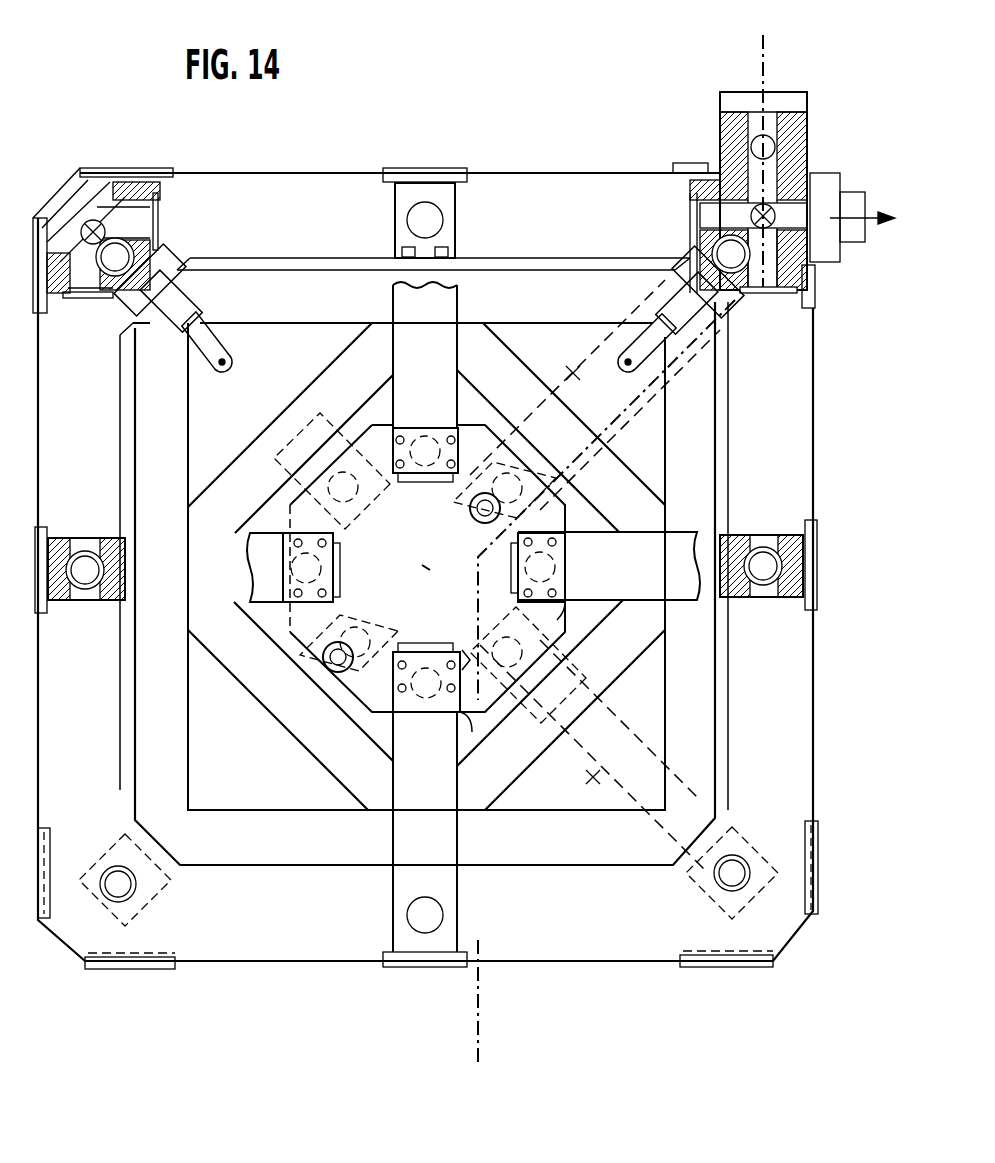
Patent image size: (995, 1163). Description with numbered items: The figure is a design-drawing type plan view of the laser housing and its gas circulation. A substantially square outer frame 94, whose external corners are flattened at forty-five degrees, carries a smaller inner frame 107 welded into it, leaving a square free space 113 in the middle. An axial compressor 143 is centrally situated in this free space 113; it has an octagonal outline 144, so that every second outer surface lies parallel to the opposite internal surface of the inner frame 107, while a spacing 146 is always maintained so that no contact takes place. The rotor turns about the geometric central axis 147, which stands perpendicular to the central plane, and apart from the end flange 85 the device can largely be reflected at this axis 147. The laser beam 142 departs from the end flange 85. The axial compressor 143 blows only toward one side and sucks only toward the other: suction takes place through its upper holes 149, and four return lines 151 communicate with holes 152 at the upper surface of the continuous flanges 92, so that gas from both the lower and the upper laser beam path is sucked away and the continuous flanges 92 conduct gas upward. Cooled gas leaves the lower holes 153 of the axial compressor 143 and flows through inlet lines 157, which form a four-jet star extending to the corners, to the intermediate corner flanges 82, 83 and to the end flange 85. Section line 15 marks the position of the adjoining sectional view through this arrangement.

The section line 15- 15 is at (763, 49).
The intermediate corner flange 82 is at (720, 975).
The intermediate corner flange 83 is at (118, 978).
The end flange 85 is at (720, 130).
The continuous flange 92 is at (790, 522).
The outer frame 94 is at (311, 860).
The inner frame 107 is at (290, 727).
The free space 113 is at (583, 523).
The laser beam 142 is at (851, 194).
The axial compressor 143 is at (585, 612).
The octagonal outline 144 is at (470, 722).
The spacing 146 is at (522, 688).
The geometric central axis 147 is at (425, 567).
The upper holes 149 is at (430, 438).
The return lines 151 is at (393, 303).
The holes 152 is at (433, 222).
The lower holes 153 is at (504, 540).
The inlet lines 157 is at (567, 368).